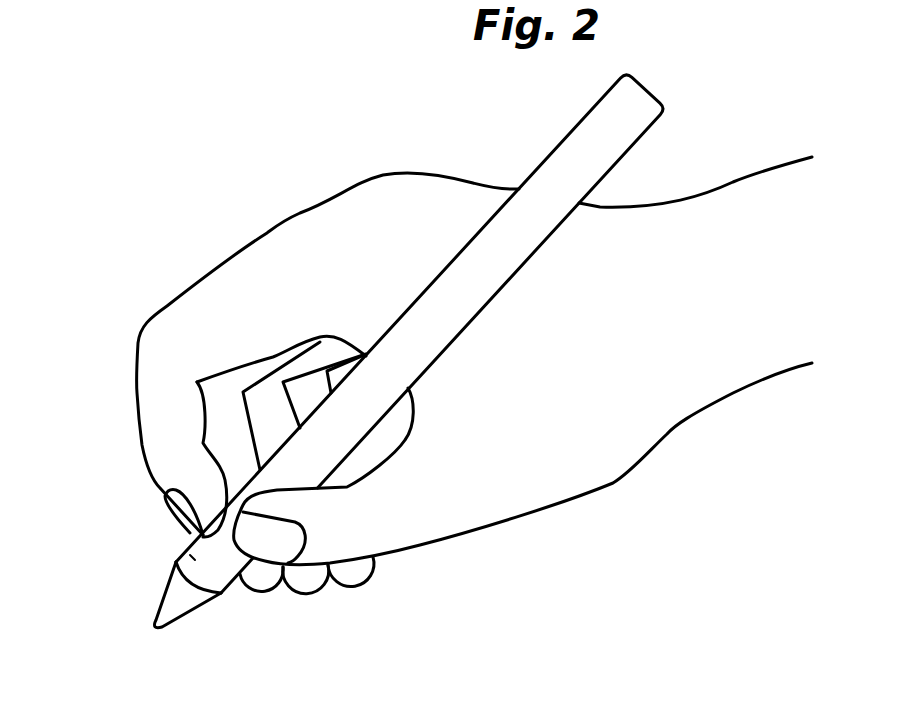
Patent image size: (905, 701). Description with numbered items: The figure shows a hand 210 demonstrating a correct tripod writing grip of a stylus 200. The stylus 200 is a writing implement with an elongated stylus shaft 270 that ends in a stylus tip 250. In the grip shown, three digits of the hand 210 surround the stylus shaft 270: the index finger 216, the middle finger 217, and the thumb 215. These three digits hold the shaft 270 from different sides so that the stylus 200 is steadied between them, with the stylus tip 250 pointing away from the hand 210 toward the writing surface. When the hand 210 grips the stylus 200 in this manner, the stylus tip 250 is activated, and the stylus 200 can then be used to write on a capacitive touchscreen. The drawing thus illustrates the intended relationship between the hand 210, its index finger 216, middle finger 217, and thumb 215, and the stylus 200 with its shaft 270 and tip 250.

The stylus 200 is at (643, 90).
The hand 210 is at (287, 261).
The thumb 215 is at (367, 538).
The index finger 216 is at (180, 509).
The middle finger 217 is at (260, 578).
The stylus tip 250 is at (152, 626).
The stylus shaft 270 is at (183, 553).